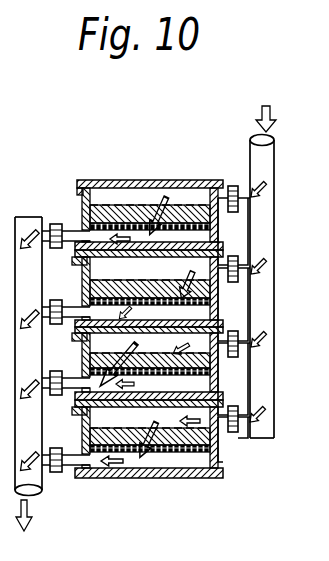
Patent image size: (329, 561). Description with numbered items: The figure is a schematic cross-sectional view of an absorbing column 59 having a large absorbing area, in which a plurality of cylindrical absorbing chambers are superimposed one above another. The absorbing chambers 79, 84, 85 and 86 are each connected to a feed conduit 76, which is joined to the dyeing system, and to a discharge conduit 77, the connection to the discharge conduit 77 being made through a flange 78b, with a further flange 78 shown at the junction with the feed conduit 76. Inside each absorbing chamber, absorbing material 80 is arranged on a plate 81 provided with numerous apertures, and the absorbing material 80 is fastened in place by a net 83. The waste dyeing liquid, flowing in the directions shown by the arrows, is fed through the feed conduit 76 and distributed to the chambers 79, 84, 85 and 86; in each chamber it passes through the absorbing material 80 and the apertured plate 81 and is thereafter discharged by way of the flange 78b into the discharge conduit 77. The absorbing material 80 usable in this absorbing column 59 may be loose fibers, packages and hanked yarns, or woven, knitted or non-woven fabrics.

The absorbing column 59 is at (159, 332).
The feed conduit 76 is at (286, 152).
The discharge conduit 77 is at (42, 489).
The inlet valve 78 is at (232, 186).
The flange 78b is at (56, 224).
The absorbing chamber 79 is at (80, 188).
The absorbing material 80 is at (135, 214).
The plate 81 is at (214, 230).
The net 83 is at (108, 204).
The absorbing chamber 84 is at (233, 304).
The absorbing chamber 85 is at (233, 379).
The absorbing chamber 86 is at (223, 463).